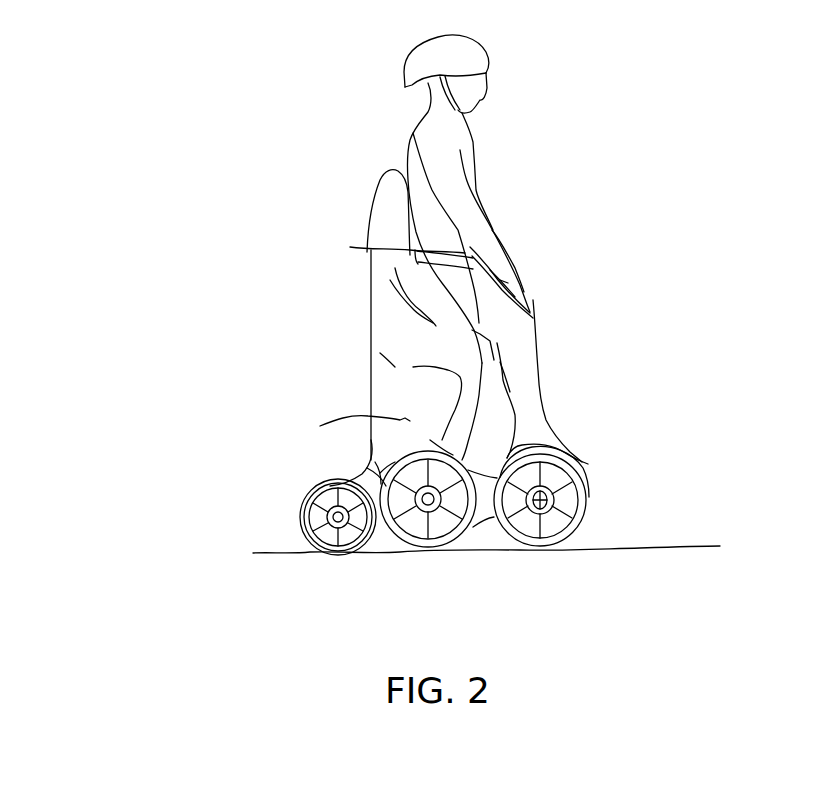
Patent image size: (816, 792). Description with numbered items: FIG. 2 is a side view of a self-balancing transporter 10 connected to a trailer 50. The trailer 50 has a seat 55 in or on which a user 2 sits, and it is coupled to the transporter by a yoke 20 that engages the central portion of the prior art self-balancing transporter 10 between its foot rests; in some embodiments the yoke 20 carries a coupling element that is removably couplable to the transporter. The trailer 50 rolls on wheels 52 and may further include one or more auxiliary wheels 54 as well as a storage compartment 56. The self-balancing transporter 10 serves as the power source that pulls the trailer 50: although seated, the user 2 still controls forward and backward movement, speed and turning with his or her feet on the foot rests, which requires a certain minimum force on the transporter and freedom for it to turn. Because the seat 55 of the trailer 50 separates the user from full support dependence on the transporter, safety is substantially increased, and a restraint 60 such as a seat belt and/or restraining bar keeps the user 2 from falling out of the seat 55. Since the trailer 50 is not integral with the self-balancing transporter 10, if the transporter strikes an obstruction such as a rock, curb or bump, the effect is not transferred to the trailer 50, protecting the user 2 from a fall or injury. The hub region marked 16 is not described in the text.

The user 2 is at (557, 433).
The self-balancing transporter 10 is at (592, 497).
The wheel hub motor 16 is at (550, 523).
The yoke 20 is at (463, 552).
The trailer 50 is at (375, 338).
The wheels 52 is at (367, 468).
The auxiliary wheels 54 is at (265, 530).
The seat 55 is at (433, 325).
The storage compartment 56 is at (320, 426).
The restraint 60 is at (350, 247).